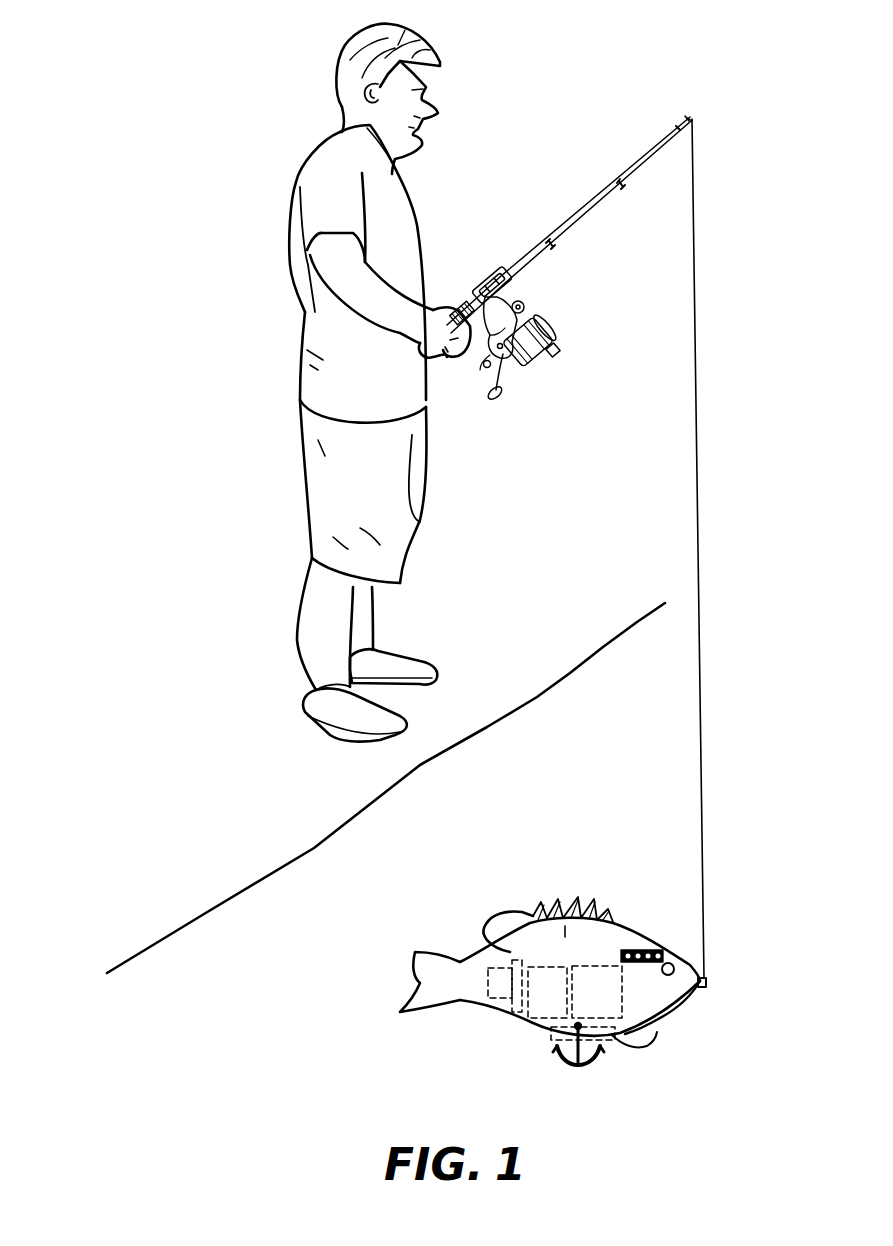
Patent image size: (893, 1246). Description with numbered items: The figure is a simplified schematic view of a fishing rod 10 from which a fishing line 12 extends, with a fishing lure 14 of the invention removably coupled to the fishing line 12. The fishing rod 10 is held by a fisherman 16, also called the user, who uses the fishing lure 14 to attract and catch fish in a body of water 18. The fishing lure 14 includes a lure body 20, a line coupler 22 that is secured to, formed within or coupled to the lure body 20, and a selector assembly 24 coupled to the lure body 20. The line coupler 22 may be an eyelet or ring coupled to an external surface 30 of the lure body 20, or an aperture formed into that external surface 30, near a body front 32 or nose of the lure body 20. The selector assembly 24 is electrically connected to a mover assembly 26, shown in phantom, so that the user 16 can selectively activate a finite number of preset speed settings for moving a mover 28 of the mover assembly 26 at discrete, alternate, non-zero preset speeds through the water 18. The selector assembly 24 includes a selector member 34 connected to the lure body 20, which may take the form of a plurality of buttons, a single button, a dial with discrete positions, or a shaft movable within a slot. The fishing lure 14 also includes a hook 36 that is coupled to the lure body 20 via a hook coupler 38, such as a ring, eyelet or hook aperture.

The fishing rod 10 is at (522, 258).
The fishing line 12 is at (698, 297).
The fishing lure 14 is at (428, 1056).
The fisherman 16 is at (315, 360).
The body of water 18 is at (214, 965).
The lure body 20 is at (565, 937).
The line coupler 22 is at (708, 988).
The selector assembly 24 is at (668, 946).
The mover assembly 26 is at (580, 966).
The mover 28 is at (543, 1003).
The external surface 30 is at (658, 1010).
The body front 32 is at (693, 1003).
The selector member 34 is at (628, 950).
The hook 36 is at (580, 1063).
The hook coupler 38 is at (586, 1040).